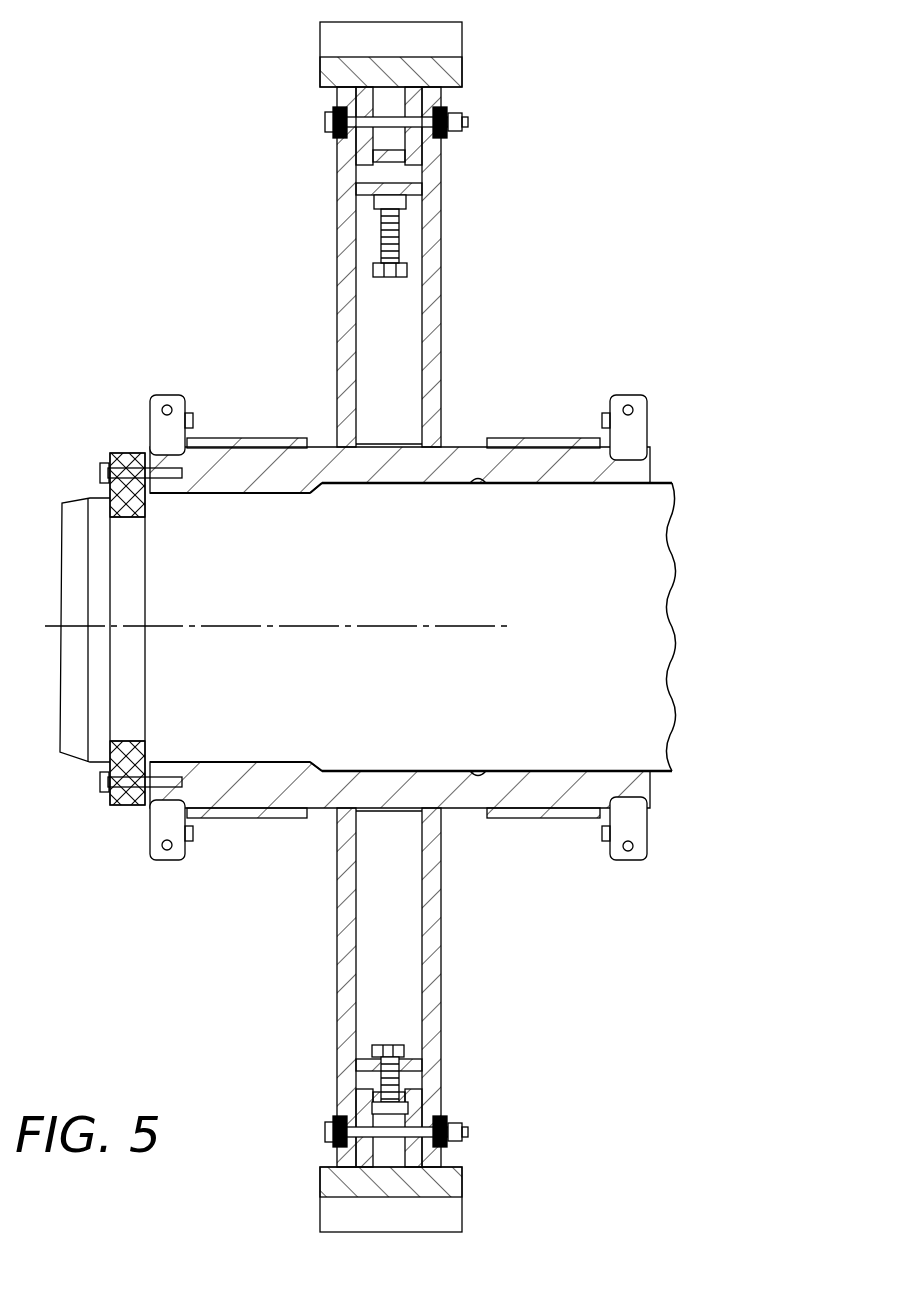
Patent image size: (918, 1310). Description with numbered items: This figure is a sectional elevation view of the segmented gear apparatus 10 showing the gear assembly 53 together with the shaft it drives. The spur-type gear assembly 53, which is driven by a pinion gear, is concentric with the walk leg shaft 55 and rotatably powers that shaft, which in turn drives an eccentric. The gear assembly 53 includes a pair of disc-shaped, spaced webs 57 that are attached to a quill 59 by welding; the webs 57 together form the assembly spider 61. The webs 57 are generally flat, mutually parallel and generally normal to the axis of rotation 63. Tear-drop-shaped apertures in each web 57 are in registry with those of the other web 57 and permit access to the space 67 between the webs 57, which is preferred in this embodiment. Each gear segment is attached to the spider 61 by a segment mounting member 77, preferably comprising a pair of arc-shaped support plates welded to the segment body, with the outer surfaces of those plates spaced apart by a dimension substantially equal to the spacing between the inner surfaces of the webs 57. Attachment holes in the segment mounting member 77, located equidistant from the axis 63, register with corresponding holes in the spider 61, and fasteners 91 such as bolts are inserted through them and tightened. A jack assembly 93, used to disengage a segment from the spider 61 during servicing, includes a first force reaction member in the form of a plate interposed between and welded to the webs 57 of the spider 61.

The apparatus 10 is at (160, 245).
The gear assembly 53 is at (443, 292).
The walk leg shaft 55 is at (645, 702).
The webs 57 is at (340, 358).
The quill 59 is at (625, 470).
The spider 61 is at (306, 276).
The axis of rotation 63 is at (430, 622).
The space 67 is at (370, 845).
The segment mounting member 77 is at (476, 146).
The fasteners 91 is at (322, 122).
The jack assembly 93 is at (388, 332).